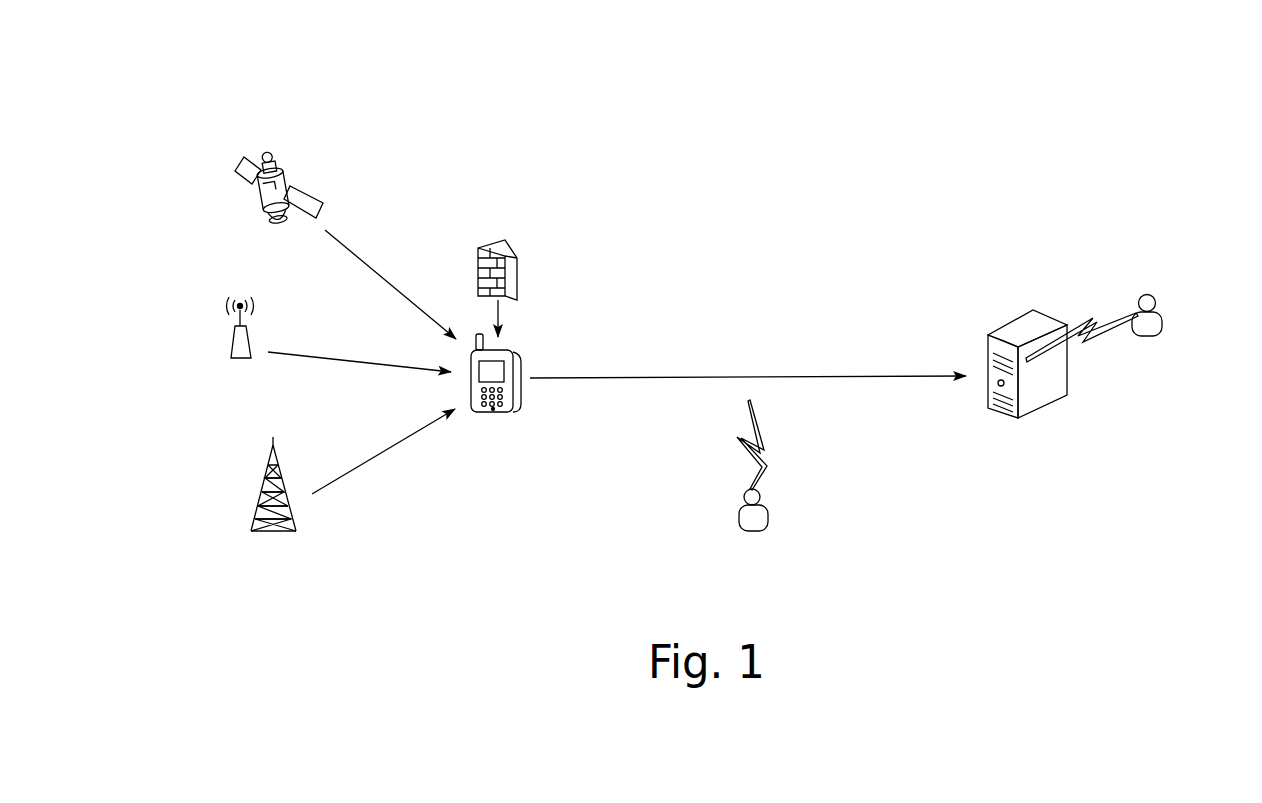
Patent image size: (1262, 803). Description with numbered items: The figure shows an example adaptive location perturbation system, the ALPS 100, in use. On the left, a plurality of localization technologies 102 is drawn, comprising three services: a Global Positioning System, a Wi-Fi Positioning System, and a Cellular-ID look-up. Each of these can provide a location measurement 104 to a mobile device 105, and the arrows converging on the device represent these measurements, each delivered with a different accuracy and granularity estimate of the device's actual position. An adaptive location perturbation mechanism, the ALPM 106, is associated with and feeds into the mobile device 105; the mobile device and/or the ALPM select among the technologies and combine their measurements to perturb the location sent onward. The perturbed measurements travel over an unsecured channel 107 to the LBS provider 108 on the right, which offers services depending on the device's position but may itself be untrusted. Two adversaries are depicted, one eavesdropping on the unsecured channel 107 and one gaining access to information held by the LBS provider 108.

The ALPS 100 is at (186, 74).
The plurality of localization technologies 102 is at (188, 616).
The location measurement 104 is at (377, 456).
The mobile device 105 is at (541, 440).
The adaptive location perturbation mechanism (ALPM) 106 is at (515, 278).
The insecure channel 107 is at (727, 340).
The LBS provider 108 is at (1000, 324).